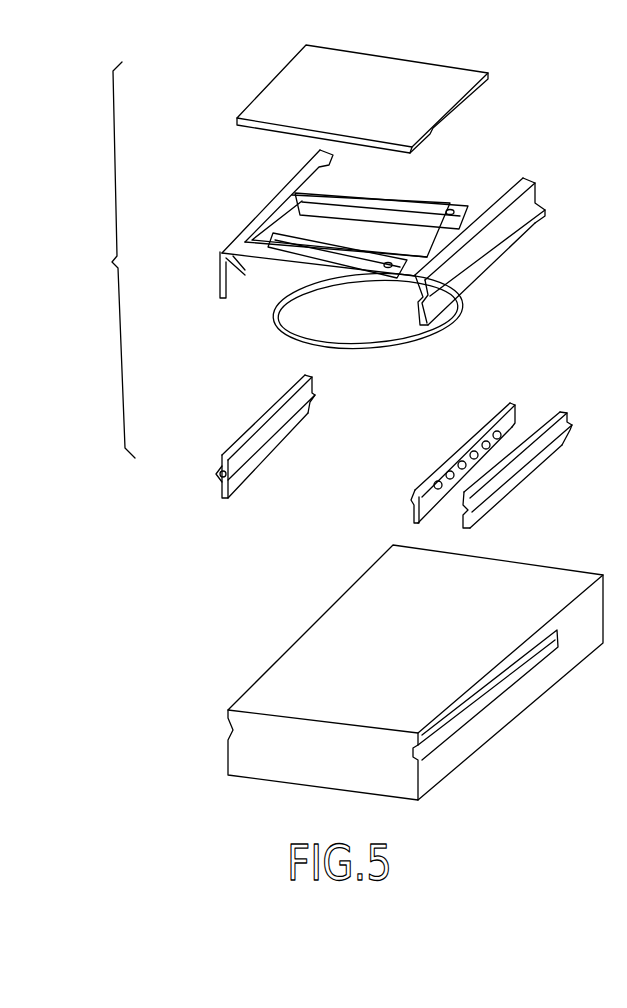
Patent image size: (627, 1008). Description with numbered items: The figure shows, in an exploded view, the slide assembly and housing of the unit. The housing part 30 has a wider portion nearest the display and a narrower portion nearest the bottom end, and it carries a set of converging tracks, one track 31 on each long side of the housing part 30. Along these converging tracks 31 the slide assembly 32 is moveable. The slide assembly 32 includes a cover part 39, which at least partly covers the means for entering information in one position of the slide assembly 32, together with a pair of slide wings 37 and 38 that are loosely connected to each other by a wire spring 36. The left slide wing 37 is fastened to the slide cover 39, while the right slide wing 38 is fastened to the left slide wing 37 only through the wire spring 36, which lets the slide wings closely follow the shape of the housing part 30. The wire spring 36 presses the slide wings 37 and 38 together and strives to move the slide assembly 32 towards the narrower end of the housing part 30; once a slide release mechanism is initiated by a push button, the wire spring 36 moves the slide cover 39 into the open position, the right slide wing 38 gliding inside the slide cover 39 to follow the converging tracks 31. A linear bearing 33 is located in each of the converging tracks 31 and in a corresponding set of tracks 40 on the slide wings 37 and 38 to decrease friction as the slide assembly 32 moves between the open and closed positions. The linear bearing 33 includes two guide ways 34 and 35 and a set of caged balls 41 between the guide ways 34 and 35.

The housing part 30 is at (293, 678).
The converging track 31 is at (462, 717).
The slide assembly 32 is at (108, 260).
The linear bearing 33 is at (232, 440).
The guide way 34 is at (455, 443).
The guide way 35 is at (535, 452).
The wire spring 36 is at (273, 307).
The left slide wing 37 is at (223, 252).
The right slide wing 38 is at (490, 252).
The cover part 39 is at (465, 102).
The track 40 is at (220, 278).
The caged balls 41 is at (445, 470).